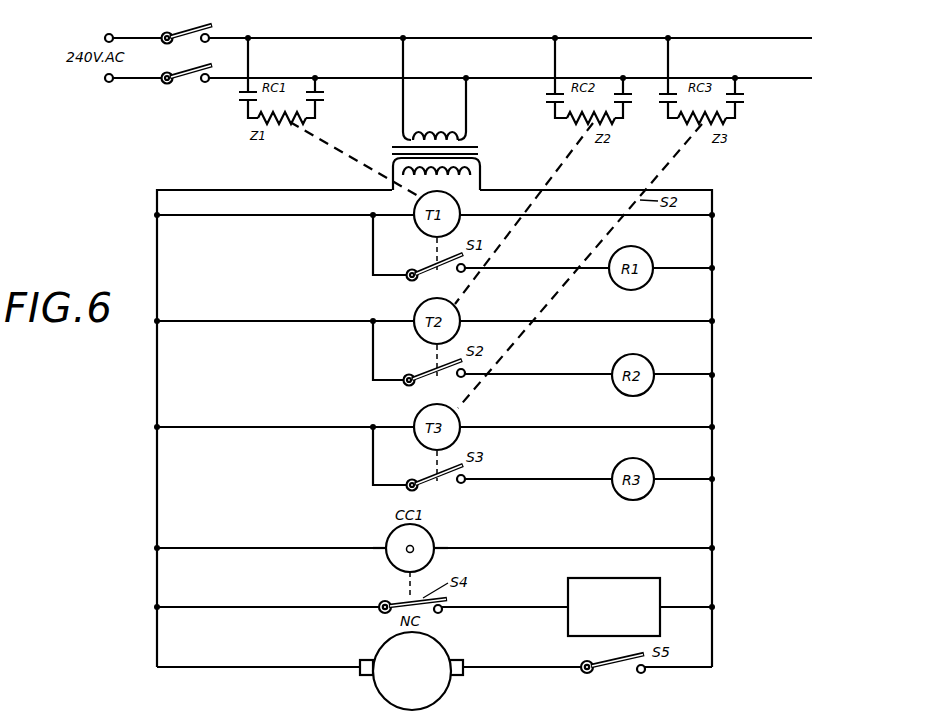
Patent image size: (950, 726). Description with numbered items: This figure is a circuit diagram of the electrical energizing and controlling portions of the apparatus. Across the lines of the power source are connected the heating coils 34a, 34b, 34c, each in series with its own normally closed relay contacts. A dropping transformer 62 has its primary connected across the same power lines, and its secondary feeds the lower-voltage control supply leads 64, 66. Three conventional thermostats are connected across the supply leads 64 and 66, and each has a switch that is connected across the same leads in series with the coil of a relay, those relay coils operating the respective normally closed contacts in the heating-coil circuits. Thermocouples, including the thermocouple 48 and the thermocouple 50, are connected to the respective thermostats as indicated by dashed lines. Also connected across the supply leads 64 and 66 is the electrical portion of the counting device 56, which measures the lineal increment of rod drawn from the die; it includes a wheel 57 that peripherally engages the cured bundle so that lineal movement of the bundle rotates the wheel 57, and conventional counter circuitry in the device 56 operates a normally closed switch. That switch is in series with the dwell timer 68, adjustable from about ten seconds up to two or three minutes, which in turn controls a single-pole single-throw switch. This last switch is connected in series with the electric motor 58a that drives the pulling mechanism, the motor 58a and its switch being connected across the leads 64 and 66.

The coil 34a is at (310, 118).
The coil 34b is at (574, 124).
The coil 34c is at (684, 125).
The thermocouple 48 is at (338, 157).
The thermocouple 50 is at (536, 199).
The counting device 56 is at (384, 542).
The wheel 57 is at (436, 540).
The electric motor 58a is at (450, 650).
The dropping transformer 62 is at (432, 128).
The supply lead 64 is at (157, 204).
The supply lead 66 is at (715, 200).
The dwell timer 68 is at (626, 578).